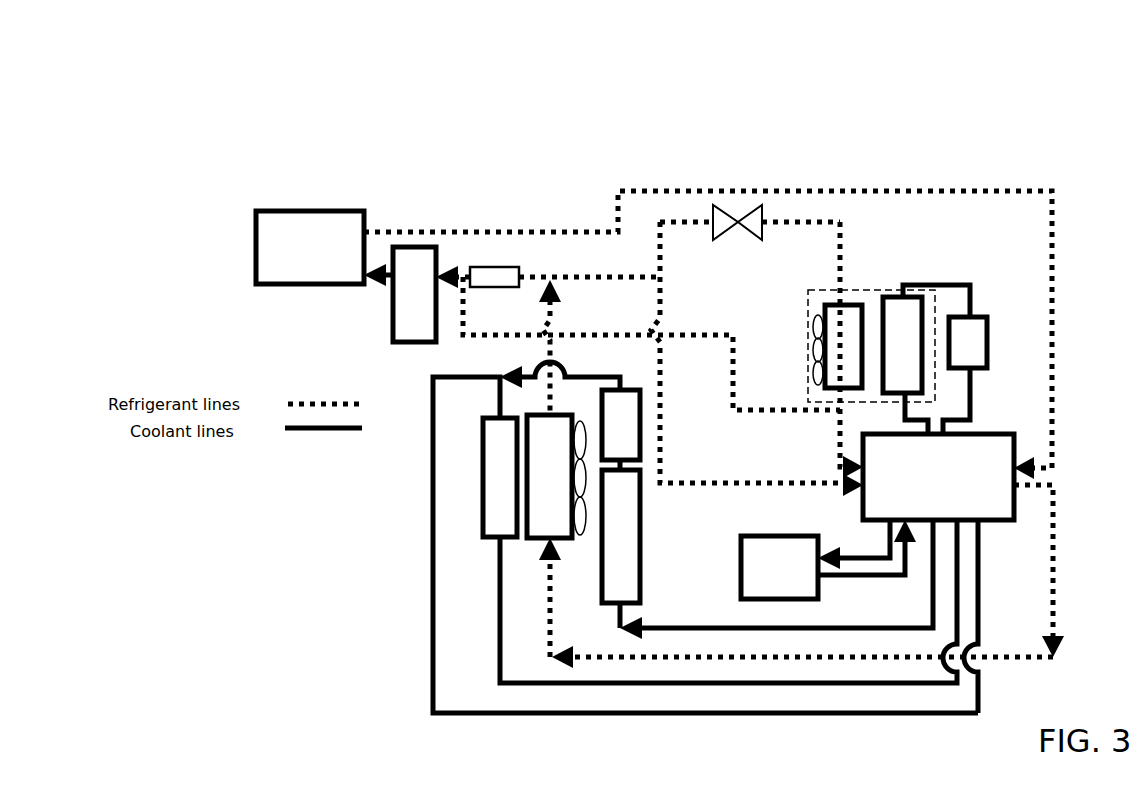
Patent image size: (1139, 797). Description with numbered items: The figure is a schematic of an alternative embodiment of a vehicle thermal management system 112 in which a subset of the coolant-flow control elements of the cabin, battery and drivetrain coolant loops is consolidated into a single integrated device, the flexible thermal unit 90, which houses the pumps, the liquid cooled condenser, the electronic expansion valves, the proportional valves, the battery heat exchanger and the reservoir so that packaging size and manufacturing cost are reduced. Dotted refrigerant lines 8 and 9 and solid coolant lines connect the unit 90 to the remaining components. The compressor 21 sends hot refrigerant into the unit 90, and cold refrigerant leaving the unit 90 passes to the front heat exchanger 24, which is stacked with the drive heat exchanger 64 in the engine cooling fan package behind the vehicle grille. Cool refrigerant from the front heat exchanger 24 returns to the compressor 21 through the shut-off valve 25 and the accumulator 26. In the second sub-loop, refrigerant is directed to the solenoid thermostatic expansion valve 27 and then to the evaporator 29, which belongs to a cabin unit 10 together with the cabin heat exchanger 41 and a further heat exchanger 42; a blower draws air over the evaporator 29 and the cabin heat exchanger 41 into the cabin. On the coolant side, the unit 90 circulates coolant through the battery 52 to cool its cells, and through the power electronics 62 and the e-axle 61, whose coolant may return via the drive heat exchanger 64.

The thermal management system 112 is at (405, 110).
The compressor 21 is at (332, 270).
The accumulator 26 is at (398, 313).
The shut-off valve 25 is at (498, 267).
The refrigerant line 8 is at (858, 191).
The solenoid thermostatic expansion valve 27 is at (713, 225).
The evaporator unit 10 is at (786, 323).
The evaporator 29 is at (843, 305).
The cabin heat exchanger 41 is at (903, 295).
The heat exchanger 42 is at (988, 337).
The flexible thermal unit 90 is at (962, 488).
The battery 52 is at (801, 581).
The refrigerant line 9 is at (700, 460).
The e-axle 61 is at (624, 398).
The vehicle power electronics 62 is at (642, 540).
The drive heat exchanger 64 is at (483, 483).
The front heat exchanger 24 is at (530, 540).